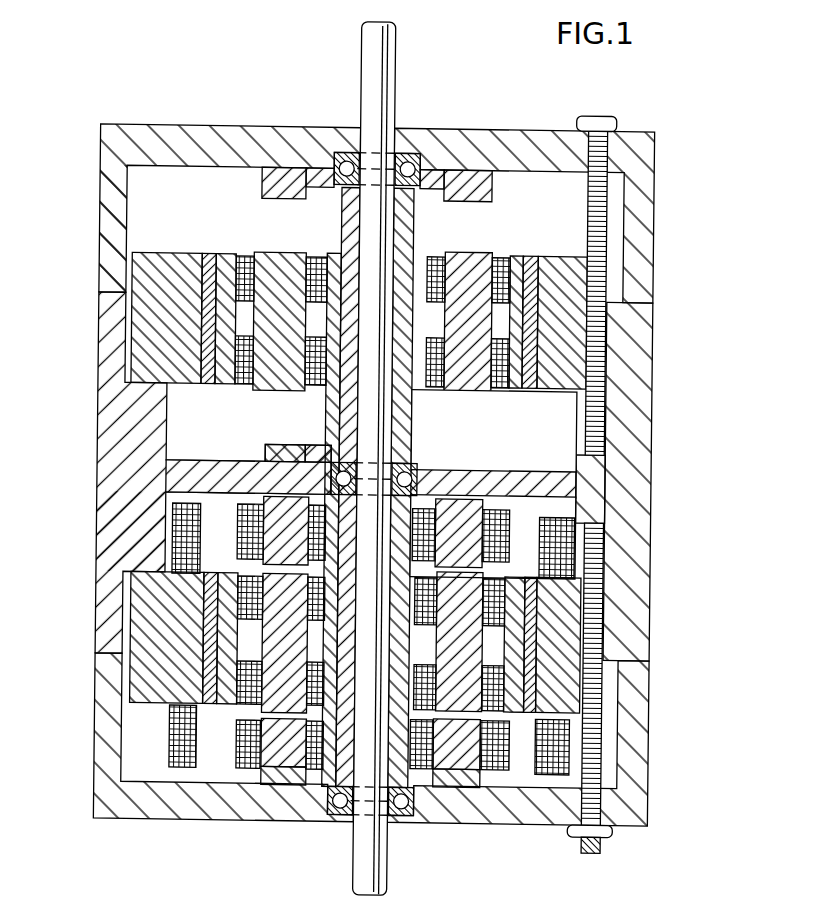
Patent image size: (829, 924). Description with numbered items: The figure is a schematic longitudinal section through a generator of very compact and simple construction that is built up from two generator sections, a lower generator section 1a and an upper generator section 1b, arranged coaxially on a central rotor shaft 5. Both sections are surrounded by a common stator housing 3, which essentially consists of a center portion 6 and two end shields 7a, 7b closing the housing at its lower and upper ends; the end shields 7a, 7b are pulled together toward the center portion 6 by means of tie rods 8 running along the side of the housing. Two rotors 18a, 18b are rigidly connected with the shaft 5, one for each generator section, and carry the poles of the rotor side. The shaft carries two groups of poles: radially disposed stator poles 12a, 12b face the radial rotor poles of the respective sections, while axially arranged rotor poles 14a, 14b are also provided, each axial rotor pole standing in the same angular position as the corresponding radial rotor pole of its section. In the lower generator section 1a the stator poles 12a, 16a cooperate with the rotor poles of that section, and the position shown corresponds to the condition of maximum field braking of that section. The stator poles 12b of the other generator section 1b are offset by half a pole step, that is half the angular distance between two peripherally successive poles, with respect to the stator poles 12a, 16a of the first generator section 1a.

The lower generator section 1a is at (114, 549).
The upper generator section 1b is at (163, 190).
The stator housing 3 is at (114, 444).
The rotor shaft 5 is at (383, 57).
The center portion 6 is at (114, 489).
The end shield 7a is at (103, 773).
The end shield 7b is at (521, 146).
The tie rod 8 is at (583, 847).
The stator pole 12a is at (145, 662).
The stator pole 12b is at (150, 330).
The axially arranged rotor pole 14a is at (258, 690).
The axially arranged rotor pole 14b is at (464, 268).
The stator pole 16a is at (286, 754).
The rotor 18a is at (398, 531).
The rotor 18b is at (409, 414).